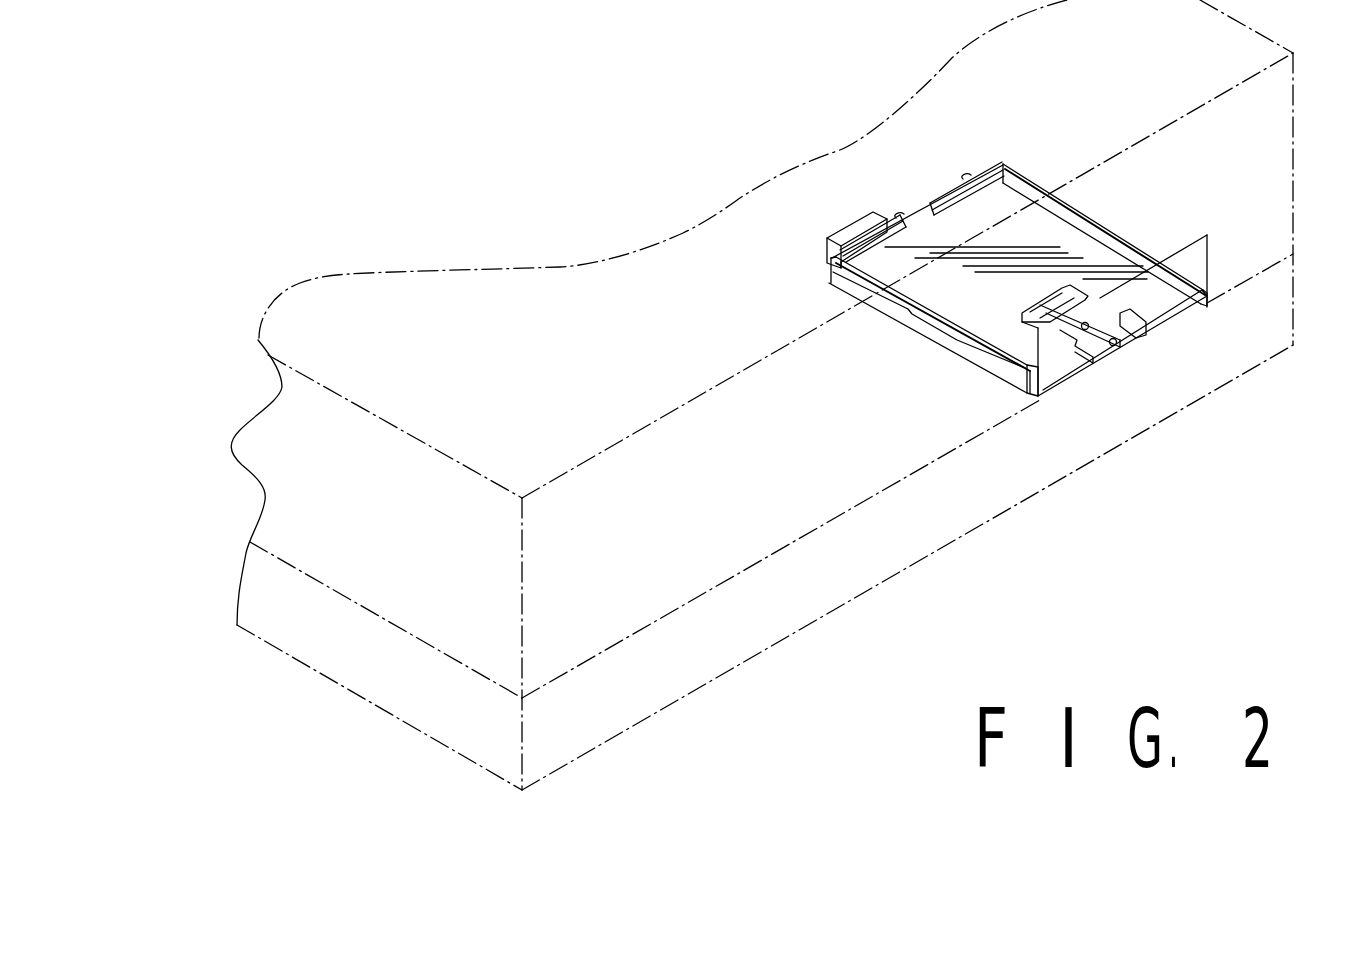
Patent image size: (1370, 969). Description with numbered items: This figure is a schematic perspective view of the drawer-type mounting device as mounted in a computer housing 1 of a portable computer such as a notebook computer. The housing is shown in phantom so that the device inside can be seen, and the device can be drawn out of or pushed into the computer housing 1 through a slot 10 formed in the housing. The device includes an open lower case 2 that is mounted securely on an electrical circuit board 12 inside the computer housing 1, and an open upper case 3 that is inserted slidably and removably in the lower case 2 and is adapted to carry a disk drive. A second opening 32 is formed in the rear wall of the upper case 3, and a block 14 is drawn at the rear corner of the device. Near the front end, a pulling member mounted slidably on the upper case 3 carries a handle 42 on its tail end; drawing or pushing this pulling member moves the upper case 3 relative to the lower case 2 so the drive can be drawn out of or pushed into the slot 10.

The computer housing 1 is at (257, 340).
The lower case 2 is at (998, 385).
The upper case 3 is at (1023, 182).
The slot 10 is at (1208, 252).
The electrical circuit board 12 is at (775, 567).
The positioning block 14 is at (855, 230).
The second opening 32 is at (897, 231).
The handle 42 is at (1120, 352).